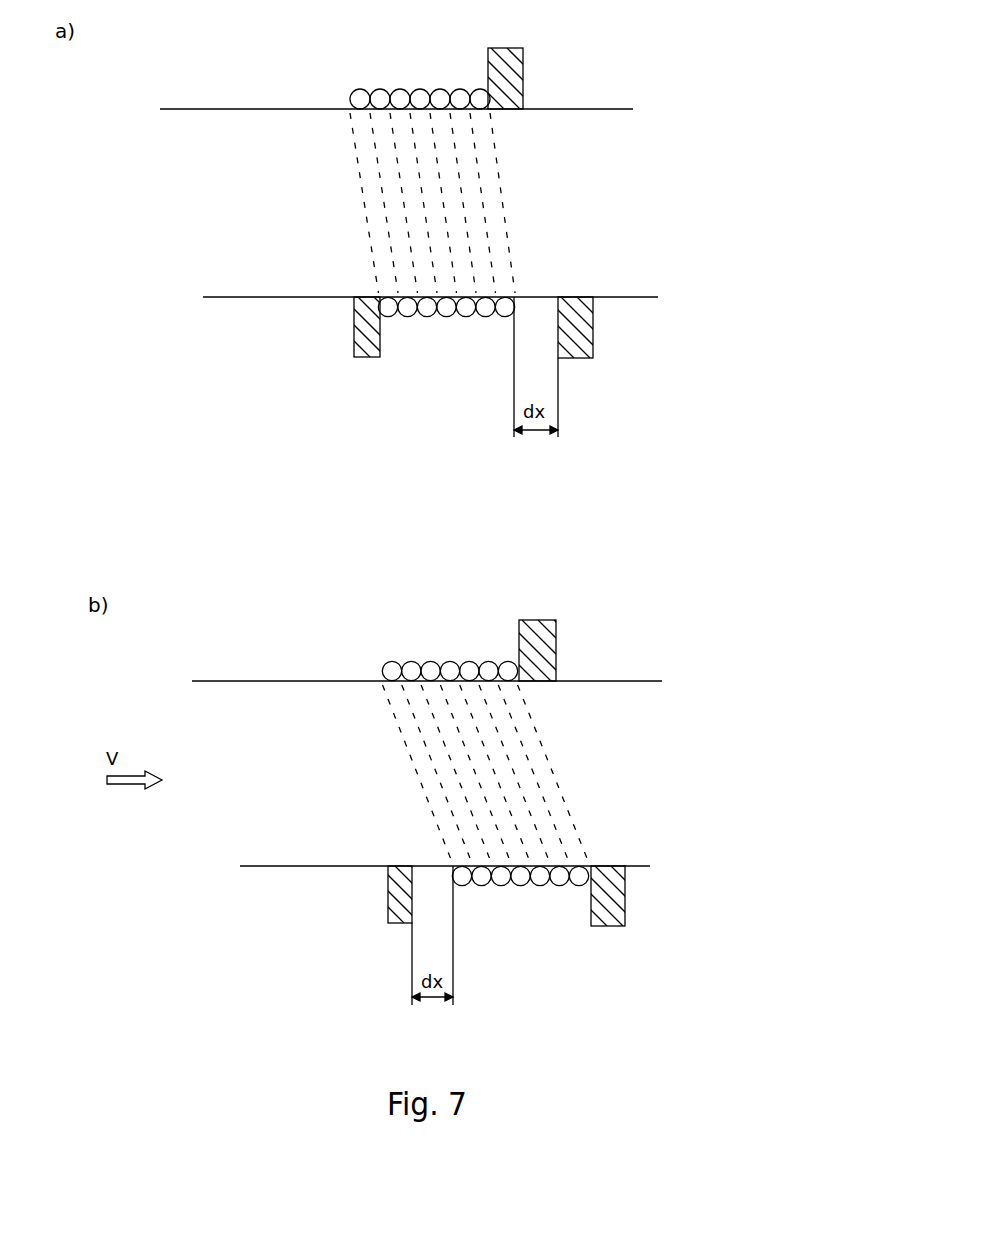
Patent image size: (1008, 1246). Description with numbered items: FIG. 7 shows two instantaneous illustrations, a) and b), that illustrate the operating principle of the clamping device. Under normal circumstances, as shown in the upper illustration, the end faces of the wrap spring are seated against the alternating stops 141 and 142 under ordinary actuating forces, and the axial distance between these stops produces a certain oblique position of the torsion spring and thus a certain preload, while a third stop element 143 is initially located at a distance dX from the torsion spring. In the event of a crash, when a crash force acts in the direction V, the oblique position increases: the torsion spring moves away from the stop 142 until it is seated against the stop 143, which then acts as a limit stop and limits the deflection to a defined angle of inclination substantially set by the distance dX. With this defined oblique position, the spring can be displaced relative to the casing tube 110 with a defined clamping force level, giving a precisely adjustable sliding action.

The casing tube 110 is at (238, 120).
The stop 141 is at (518, 82).
The stop 142 is at (357, 329).
The third stop element 143 is at (593, 328).